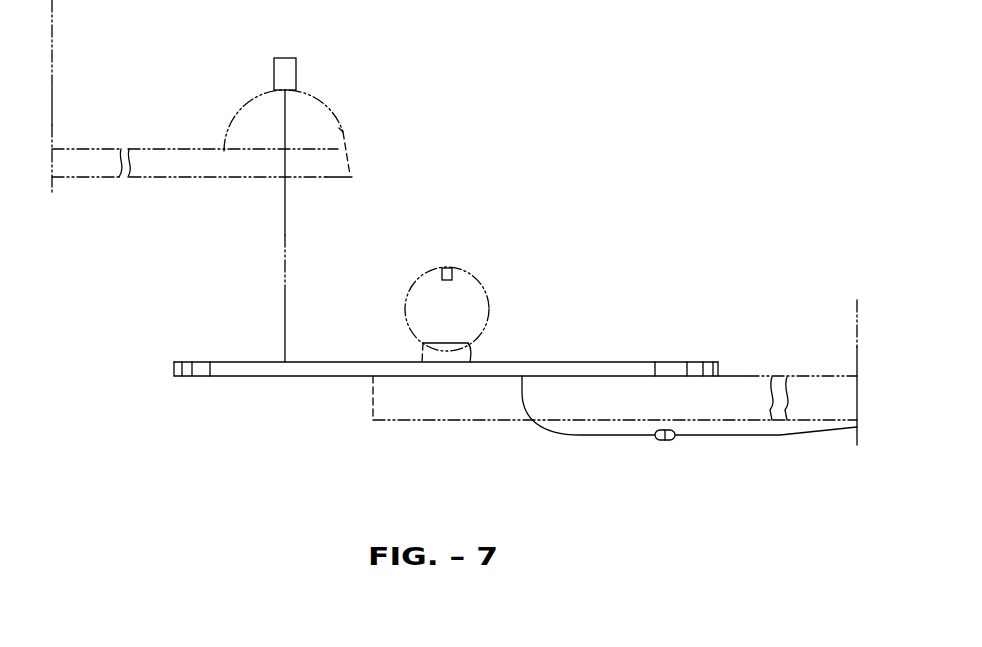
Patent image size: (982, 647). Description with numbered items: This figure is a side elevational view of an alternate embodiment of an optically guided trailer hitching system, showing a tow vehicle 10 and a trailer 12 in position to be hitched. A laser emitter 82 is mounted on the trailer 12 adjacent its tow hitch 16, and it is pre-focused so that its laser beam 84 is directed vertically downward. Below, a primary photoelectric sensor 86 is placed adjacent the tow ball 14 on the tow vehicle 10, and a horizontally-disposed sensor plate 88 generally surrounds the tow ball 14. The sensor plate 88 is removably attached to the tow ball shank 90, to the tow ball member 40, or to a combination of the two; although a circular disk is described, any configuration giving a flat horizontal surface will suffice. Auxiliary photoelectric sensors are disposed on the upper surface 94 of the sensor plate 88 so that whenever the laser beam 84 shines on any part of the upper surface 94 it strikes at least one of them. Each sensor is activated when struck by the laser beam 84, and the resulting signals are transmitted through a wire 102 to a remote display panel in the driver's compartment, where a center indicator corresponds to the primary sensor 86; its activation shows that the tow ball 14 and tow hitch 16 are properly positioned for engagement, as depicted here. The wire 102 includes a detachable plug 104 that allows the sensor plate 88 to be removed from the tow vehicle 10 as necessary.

The tow vehicle 10 is at (855, 346).
The trailer 12 is at (53, 100).
The tow ball 14 is at (488, 283).
The tow hitch 16 is at (346, 128).
The tow ball member 40 is at (448, 421).
The laser emitter 82 is at (282, 57).
The laser beam 84 is at (285, 283).
The primary photoelectric sensor 86 is at (447, 268).
The sensor plate 88 is at (310, 370).
The tow ball shank 90 is at (473, 348).
The upper surface 94 is at (320, 362).
The wire 102 is at (786, 436).
The detachable plug 104 is at (660, 441).